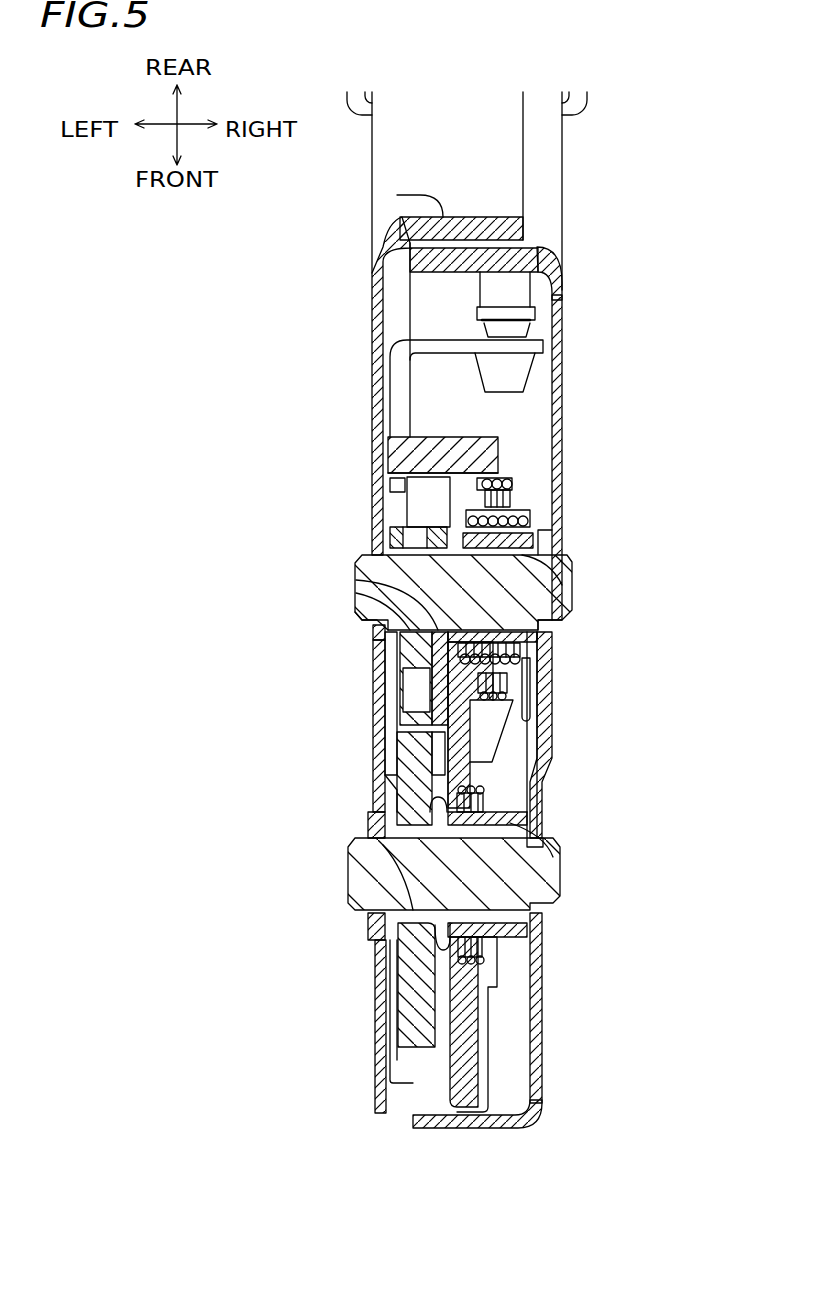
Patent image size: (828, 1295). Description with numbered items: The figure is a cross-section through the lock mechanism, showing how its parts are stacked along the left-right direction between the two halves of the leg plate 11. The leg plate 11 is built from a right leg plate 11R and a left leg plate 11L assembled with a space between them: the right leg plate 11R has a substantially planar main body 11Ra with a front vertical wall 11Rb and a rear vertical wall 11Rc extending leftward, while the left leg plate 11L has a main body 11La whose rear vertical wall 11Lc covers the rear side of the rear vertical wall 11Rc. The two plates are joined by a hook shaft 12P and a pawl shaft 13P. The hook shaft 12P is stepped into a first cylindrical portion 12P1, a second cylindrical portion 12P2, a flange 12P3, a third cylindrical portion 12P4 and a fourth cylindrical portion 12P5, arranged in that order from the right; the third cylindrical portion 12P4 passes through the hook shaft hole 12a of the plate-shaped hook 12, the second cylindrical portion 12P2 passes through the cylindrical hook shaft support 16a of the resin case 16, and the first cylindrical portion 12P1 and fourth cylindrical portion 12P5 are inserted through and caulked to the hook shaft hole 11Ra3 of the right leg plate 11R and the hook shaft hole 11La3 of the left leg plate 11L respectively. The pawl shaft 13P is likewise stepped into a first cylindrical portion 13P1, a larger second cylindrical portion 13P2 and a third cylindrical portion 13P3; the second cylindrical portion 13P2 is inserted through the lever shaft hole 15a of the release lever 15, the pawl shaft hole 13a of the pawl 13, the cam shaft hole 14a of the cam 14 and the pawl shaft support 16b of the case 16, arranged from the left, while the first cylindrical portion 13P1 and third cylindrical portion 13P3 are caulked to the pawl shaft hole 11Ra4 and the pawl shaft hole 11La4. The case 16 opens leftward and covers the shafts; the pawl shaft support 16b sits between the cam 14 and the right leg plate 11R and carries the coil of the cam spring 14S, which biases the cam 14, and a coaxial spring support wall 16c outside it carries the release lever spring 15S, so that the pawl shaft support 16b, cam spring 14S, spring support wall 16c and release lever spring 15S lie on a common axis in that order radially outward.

The leg plate 11 is at (467, 191).
The left leg plate 11L is at (372, 373).
The right leg plate 11R is at (562, 402).
The rear vertical wall 11Lc is at (397, 198).
The rear vertical wall 11Rc is at (537, 250).
The main body 11La is at (373, 698).
The main body 11Ra is at (553, 737).
The hook shaft hole 11La3 is at (355, 842).
The hook shaft hole 11Ra3 is at (555, 840).
The pawl shaft hole 11La4 is at (367, 613).
The pawl shaft hole 11Ra4 is at (570, 612).
The front vertical wall 11Rb is at (466, 1130).
The hook 12 is at (385, 768).
The hook shaft hole 12a is at (373, 870).
The hook shaft 12P is at (560, 885).
The first cylindrical portion 12P1 is at (543, 915).
The second cylindrical portion 12P2 is at (500, 960).
The flange 12P3 is at (380, 1013).
The third cylindrical portion 12P4 is at (377, 977).
The fourth cylindrical portion 12P5 is at (363, 917).
The pawl 13 is at (375, 663).
The pawl shaft hole 13a is at (358, 585).
The pawl shaft 13P is at (575, 588).
The first cylindrical portion 13P1 is at (563, 548).
The second cylindrical portion 13P2 is at (515, 490).
The third cylindrical portion 13P3 is at (368, 563).
The cam 14 is at (377, 719).
The cam shaft hole 14a is at (360, 563).
The cam spring 14S is at (548, 665).
The release lever 15 is at (372, 508).
The lever shaft hole 15a is at (357, 603).
The release lever spring 15S is at (550, 715).
The case 16 is at (553, 638).
The hook shaft support 16a is at (540, 850).
The pawl shaft support 16b is at (542, 543).
The spring support wall 16c is at (547, 690).